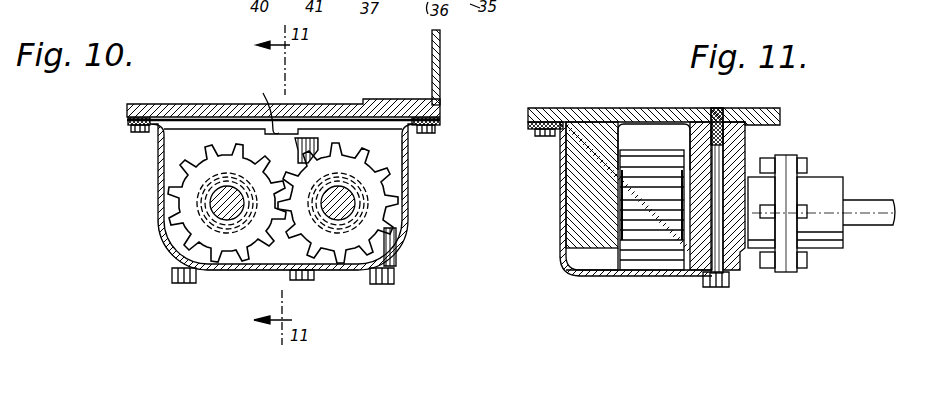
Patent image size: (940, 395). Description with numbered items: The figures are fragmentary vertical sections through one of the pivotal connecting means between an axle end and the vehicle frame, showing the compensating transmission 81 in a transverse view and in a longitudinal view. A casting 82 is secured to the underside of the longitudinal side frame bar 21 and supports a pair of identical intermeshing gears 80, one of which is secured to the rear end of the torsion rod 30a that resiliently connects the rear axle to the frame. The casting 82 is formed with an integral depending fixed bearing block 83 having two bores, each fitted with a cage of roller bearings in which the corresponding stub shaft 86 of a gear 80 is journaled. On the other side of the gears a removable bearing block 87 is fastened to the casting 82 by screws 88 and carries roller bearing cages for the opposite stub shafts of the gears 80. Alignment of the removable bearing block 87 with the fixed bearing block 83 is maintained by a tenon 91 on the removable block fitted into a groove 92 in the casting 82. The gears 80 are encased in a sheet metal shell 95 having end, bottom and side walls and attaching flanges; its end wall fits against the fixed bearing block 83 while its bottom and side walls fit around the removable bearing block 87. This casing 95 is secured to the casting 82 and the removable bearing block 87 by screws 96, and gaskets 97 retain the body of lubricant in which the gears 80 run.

In FIG. 10, the longitudinal side frame bar 21 is at (441, 46).
In FIG. 11, the torsion rod 30a is at (880, 202).
In FIG. 10, the gear 80 is at (296, 232).
In FIG. 11, the gear 80 is at (650, 270).
In FIG. 10, the compensating transmission 81 is at (146, 156).
In FIG. 11, the compensating transmission 81 is at (676, 94).
In FIG. 10, the casting 82 is at (232, 104).
In FIG. 11, the casting 82 is at (618, 108).
In FIG. 10, the fixed bearing block 83 is at (254, 270).
In FIG. 11, the fixed bearing block 83 is at (570, 222).
In FIG. 10, the stub shaft 86 is at (420, 239).
In FIG. 10, the removable bearing block 87 is at (408, 163).
In FIG. 11, the removable bearing block 87 is at (742, 262).
In FIG. 10, the screw 88 is at (378, 297).
In FIG. 11, the screw 88 is at (716, 288).
In FIG. 10, the tenon 91 is at (304, 112).
In FIG. 10, the groove 92 is at (261, 106).
In FIG. 10, the sheet metal shell 95 is at (166, 236).
In FIG. 11, the sheet metal shell 95 is at (566, 272).
In FIG. 10, the screw 96 is at (450, 143).
In FIG. 11, the screw 96 is at (540, 137).
In FIG. 10, the gasket 97 is at (462, 121).
In FIG. 11, the gasket 97 is at (690, 312).